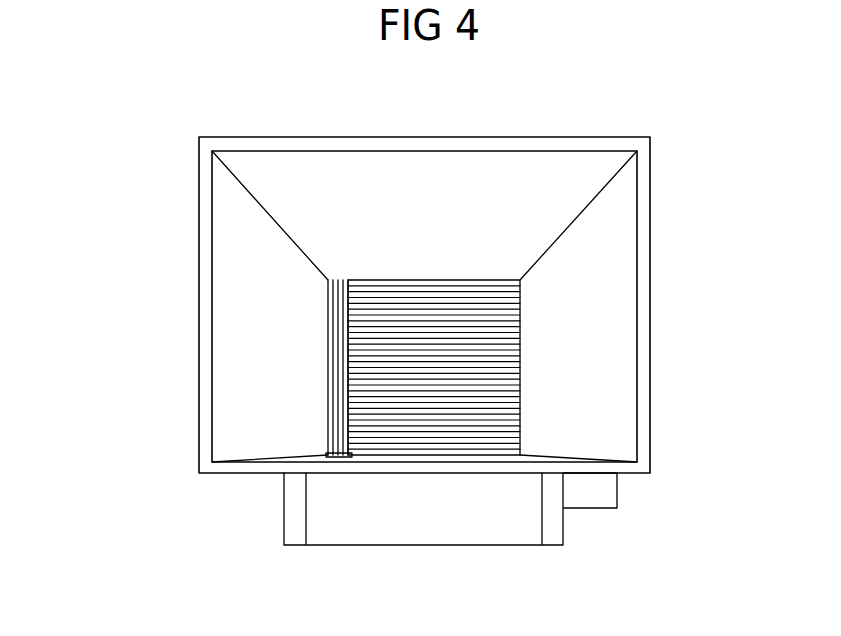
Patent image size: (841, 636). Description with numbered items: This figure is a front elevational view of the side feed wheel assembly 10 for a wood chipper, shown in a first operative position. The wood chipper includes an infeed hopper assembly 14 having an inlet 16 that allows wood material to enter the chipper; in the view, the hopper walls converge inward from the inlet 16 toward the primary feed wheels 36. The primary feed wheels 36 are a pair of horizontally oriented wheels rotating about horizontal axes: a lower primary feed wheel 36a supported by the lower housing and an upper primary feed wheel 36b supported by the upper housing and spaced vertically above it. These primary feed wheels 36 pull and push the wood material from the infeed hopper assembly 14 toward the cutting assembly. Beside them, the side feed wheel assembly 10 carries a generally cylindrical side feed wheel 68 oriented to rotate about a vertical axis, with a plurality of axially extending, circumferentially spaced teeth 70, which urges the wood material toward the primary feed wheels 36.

The side feed wheel assembly 10 is at (172, 340).
The infeed hopper assembly 14 is at (650, 313).
The inlet 16 is at (637, 290).
The primary feed wheels 36 is at (520, 347).
The lower primary feed wheel 36a is at (457, 438).
The upper primary feed wheel 36b is at (472, 307).
The side feed wheel 68 is at (330, 315).
The teeth 70 is at (337, 427).